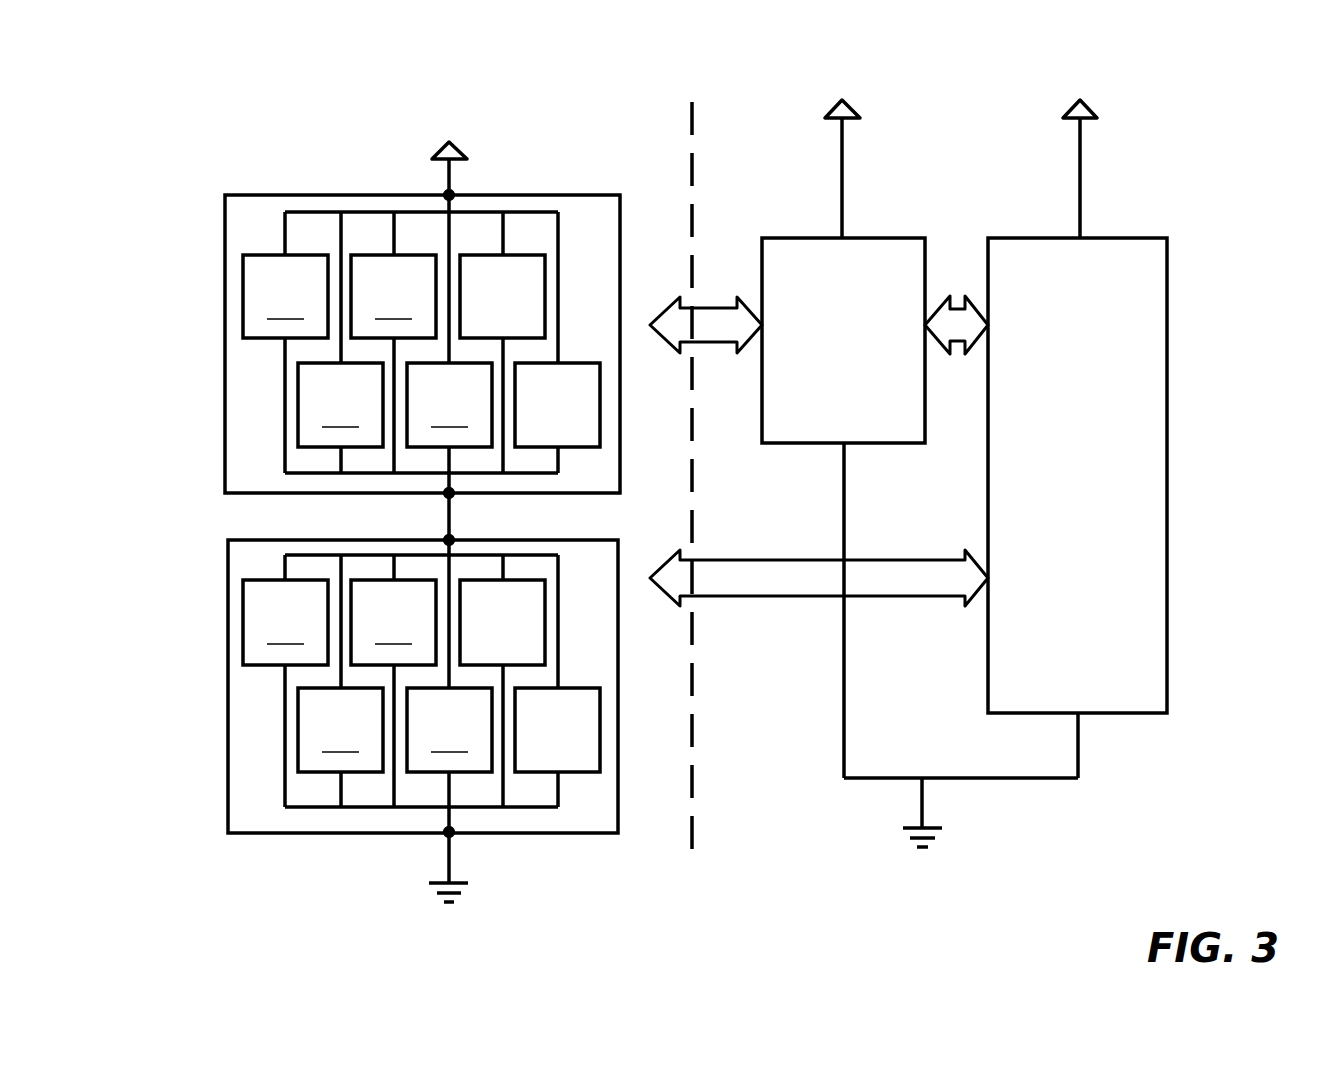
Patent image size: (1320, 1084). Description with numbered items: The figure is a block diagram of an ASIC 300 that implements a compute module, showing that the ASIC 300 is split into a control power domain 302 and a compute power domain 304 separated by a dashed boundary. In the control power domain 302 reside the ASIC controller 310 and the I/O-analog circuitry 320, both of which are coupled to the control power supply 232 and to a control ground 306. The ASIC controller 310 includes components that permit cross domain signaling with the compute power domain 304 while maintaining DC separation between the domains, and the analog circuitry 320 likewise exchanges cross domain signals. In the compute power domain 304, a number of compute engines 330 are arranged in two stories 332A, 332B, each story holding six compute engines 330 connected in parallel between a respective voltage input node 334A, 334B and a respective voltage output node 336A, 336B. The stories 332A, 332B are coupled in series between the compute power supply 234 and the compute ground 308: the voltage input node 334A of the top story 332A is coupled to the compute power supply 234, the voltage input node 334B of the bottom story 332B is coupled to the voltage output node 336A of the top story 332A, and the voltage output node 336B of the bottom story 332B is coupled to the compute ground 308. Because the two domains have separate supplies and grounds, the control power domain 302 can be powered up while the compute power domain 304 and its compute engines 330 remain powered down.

The ASIC 300 is at (262, 150).
The control power domain 302 is at (758, 872).
The compute power domain 304 is at (673, 872).
The control ground 306 is at (944, 828).
The compute ground 308 is at (430, 883).
The ASIC controller 310 is at (1059, 516).
The I/O-analog circuitry 320 is at (824, 379).
The compute engine 330 is at (421, 509).
The top story 332A is at (226, 492).
The bottom story 332B is at (228, 832).
The voltage input node of top story 334A is at (455, 193).
The voltage input node of bottom story 334B is at (446, 539).
The voltage output node of top story 336A is at (455, 497).
The voltage output node of bottom story 336B is at (455, 836).
The control power supply 232 is at (827, 117).
The compute power supply 234 is at (432, 157).